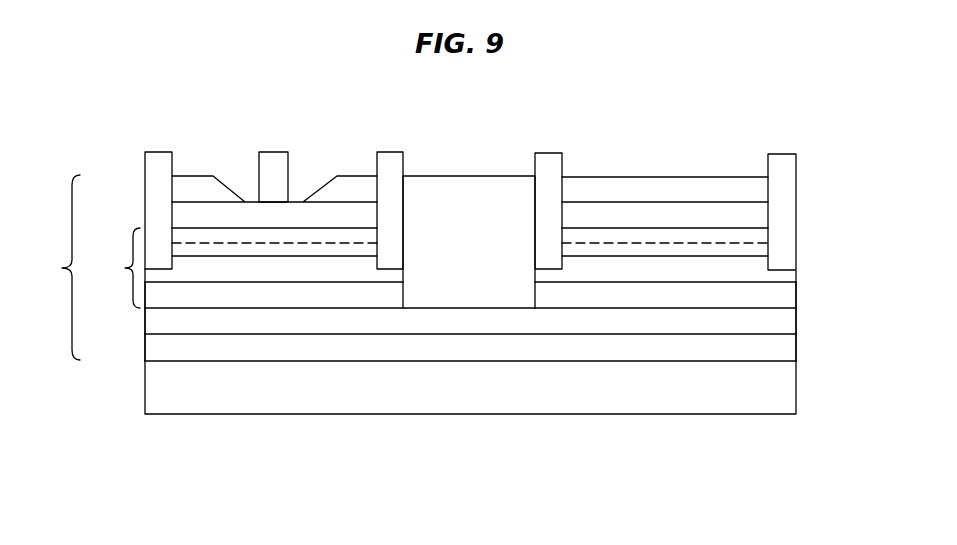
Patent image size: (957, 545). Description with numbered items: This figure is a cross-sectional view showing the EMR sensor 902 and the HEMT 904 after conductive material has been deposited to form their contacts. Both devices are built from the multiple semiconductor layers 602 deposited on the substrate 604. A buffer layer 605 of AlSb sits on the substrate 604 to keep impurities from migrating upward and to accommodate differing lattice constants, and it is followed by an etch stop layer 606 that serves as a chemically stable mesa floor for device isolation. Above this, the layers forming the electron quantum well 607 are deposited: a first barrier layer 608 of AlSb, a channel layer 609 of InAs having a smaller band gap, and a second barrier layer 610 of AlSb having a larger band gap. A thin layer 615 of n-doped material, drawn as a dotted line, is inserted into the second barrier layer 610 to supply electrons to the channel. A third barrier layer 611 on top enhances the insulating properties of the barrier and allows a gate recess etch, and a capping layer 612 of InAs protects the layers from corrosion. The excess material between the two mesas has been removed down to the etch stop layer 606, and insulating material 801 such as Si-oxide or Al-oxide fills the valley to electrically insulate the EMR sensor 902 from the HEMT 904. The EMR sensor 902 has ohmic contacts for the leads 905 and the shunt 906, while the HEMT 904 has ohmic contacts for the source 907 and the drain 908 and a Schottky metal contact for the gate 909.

The multiple semiconductor layers 602 is at (52, 267).
The substrate 604 is at (472, 405).
The buffer layer 605 is at (788, 352).
The etch stop layer 606 is at (788, 325).
The electron quantum well 607 is at (112, 268).
The first barrier layer 608 is at (788, 302).
The channel layer 609 is at (783, 277).
The second barrier layer 610 is at (760, 244).
The third barrier layer 611 is at (760, 218).
The capping layer 612 is at (760, 190).
The thin layer of n-doped material 615 is at (232, 243).
The insulating material 801 is at (483, 190).
The EMR sensor 902 is at (535, 92).
The HEMT 904 is at (405, 92).
The leads 905 is at (553, 158).
The shunt 906 is at (787, 158).
The source 907 is at (163, 158).
The drain 908 is at (392, 158).
The gate 909 is at (278, 158).